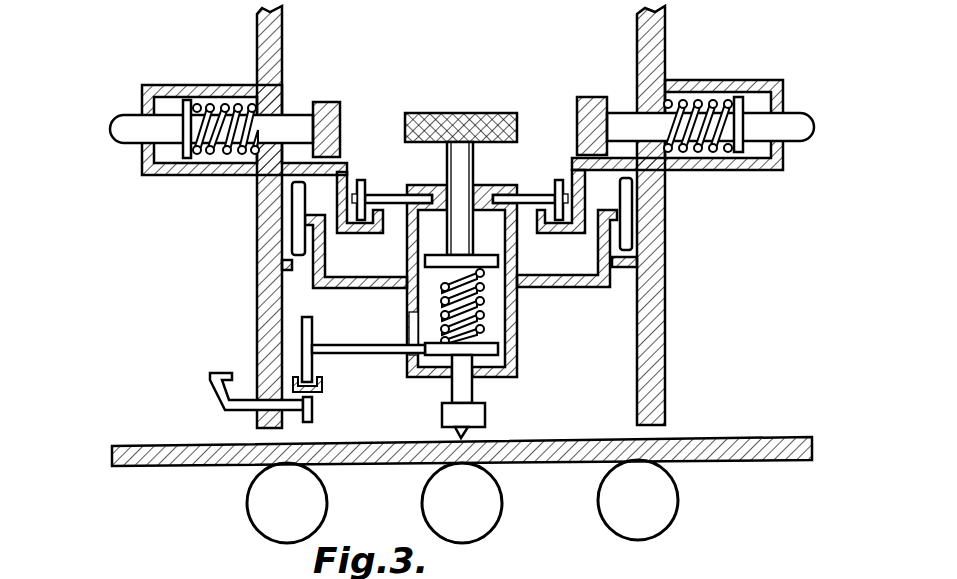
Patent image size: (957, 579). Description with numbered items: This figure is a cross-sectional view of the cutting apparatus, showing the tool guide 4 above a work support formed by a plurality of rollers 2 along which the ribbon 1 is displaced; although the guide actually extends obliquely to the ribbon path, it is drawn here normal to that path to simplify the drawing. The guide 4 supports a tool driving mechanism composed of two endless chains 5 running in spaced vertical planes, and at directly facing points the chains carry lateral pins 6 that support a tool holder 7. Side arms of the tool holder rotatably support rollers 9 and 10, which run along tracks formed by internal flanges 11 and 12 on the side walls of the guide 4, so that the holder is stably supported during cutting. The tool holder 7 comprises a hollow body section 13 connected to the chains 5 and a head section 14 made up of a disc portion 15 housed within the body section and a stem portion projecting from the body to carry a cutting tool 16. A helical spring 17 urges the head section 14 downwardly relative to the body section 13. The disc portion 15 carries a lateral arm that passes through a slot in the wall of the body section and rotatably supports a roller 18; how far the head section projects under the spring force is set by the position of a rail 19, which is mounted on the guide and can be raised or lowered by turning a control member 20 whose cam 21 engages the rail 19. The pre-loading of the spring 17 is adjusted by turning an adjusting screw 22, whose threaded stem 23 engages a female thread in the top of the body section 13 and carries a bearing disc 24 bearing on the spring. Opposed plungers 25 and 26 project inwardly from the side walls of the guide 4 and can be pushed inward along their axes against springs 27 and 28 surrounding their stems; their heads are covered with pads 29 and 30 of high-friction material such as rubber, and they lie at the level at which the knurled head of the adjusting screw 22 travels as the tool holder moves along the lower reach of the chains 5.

The ribbon 1 is at (757, 437).
The rollers 2 is at (678, 512).
The tool guide 4 is at (668, 377).
The endless chains 5 is at (360, 180).
The lateral pins 6 is at (376, 195).
The tool holder 7 is at (509, 177).
The roller 9 is at (632, 227).
The roller 10 is at (292, 222).
The internal flange 11 is at (606, 176).
The internal flange 12 is at (323, 176).
The hollow body section 13 is at (407, 185).
The head section 14 is at (476, 388).
The disc portion 15 is at (498, 349).
The cutting tool 16 is at (485, 418).
The helical spring 17 is at (482, 300).
The roller 18 is at (302, 343).
The rail 19 is at (322, 385).
The control member 20 is at (212, 380).
The cam 21 is at (312, 415).
The adjusting screw 22 is at (418, 112).
The threaded stem 23 is at (473, 164).
The bearing disc 24 is at (498, 259).
The plunger 25 is at (636, 110).
The plunger 26 is at (291, 110).
The spring 27 is at (705, 92).
The spring 28 is at (207, 108).
The pad 29 is at (587, 97).
The pad 30 is at (330, 102).